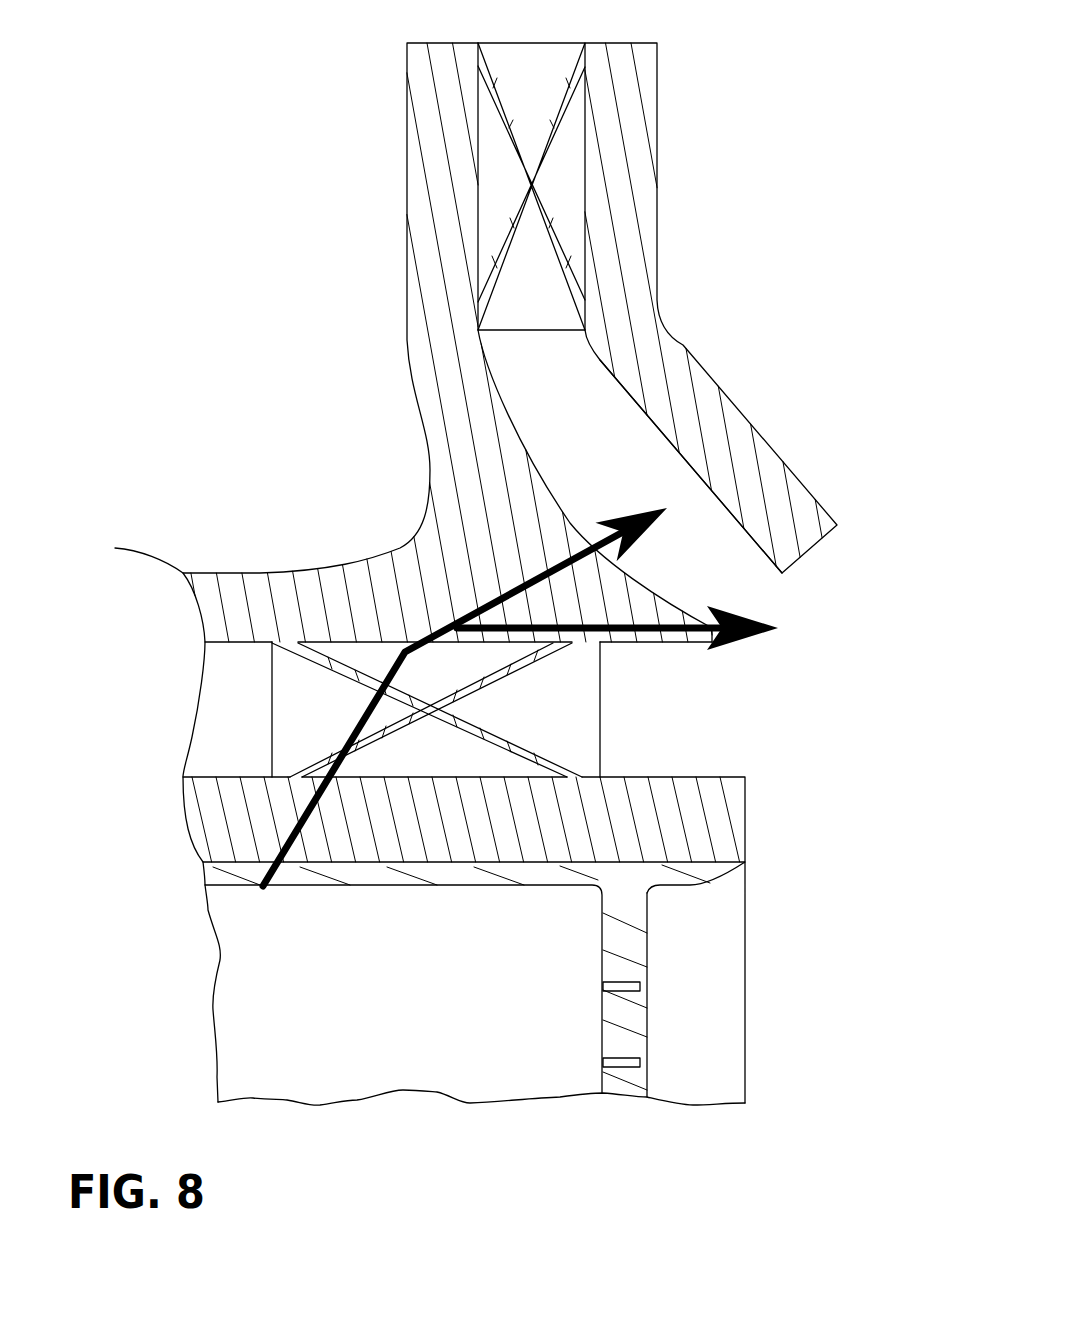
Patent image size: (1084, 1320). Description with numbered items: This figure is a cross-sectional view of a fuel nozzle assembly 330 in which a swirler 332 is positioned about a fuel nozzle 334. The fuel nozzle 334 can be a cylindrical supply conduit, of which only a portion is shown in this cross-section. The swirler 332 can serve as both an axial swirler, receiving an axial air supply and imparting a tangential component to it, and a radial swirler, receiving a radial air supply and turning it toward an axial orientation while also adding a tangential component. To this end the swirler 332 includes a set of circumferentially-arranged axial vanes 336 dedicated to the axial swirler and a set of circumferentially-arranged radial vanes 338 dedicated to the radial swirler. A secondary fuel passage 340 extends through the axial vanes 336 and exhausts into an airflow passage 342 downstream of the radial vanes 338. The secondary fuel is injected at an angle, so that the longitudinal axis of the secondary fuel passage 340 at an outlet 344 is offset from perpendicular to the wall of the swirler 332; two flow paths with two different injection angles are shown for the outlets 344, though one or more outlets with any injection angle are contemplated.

The fuel nozzle assembly 330 is at (500, 566).
The swirler 332 is at (395, 126).
The fuel nozzle 334 is at (241, 982).
The axial vanes 336 is at (323, 718).
The radial vanes 338 is at (572, 193).
The secondary fuel passage 340 is at (300, 812).
The airflow passage 342 is at (604, 439).
The outlet 344 is at (581, 530).